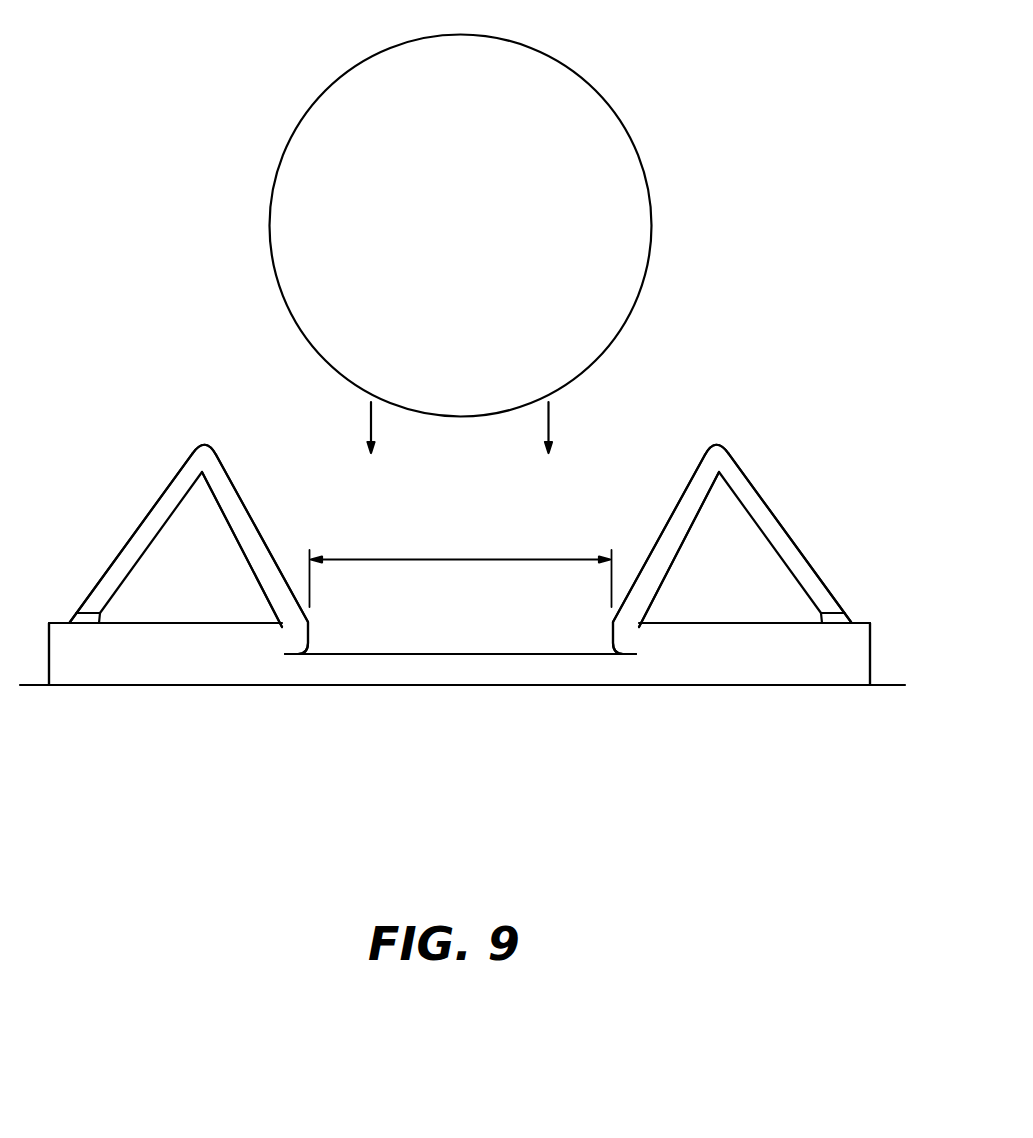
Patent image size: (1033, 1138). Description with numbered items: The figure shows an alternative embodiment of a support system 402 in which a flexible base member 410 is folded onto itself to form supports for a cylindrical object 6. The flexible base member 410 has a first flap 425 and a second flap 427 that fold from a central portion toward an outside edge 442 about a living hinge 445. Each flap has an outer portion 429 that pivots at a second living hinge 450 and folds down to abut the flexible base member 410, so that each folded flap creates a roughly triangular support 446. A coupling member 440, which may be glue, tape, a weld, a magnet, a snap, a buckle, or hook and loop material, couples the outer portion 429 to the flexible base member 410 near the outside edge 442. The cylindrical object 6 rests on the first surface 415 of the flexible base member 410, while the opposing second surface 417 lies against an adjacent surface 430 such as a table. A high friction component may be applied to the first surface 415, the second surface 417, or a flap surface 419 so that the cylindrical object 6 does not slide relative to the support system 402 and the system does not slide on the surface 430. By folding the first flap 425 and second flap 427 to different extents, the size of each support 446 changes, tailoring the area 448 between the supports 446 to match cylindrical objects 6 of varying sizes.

The cylindrical object 6 is at (450, 240).
The support system 402 is at (710, 320).
The flexible base member 410 is at (759, 663).
The first surface 415 is at (383, 654).
The second surface 417 is at (407, 686).
The flap surface 419 is at (247, 497).
The first flap 425 is at (252, 530).
The second flap 427 is at (668, 527).
The outer portion 429 is at (160, 506).
The surface 430 is at (900, 686).
The coupling member 440 is at (86, 621).
The outside edge 442 is at (49, 648).
The living hinge 445 is at (283, 627).
The support 446 is at (143, 448).
The area 448 is at (491, 559).
The second living hinge 450 is at (203, 470).